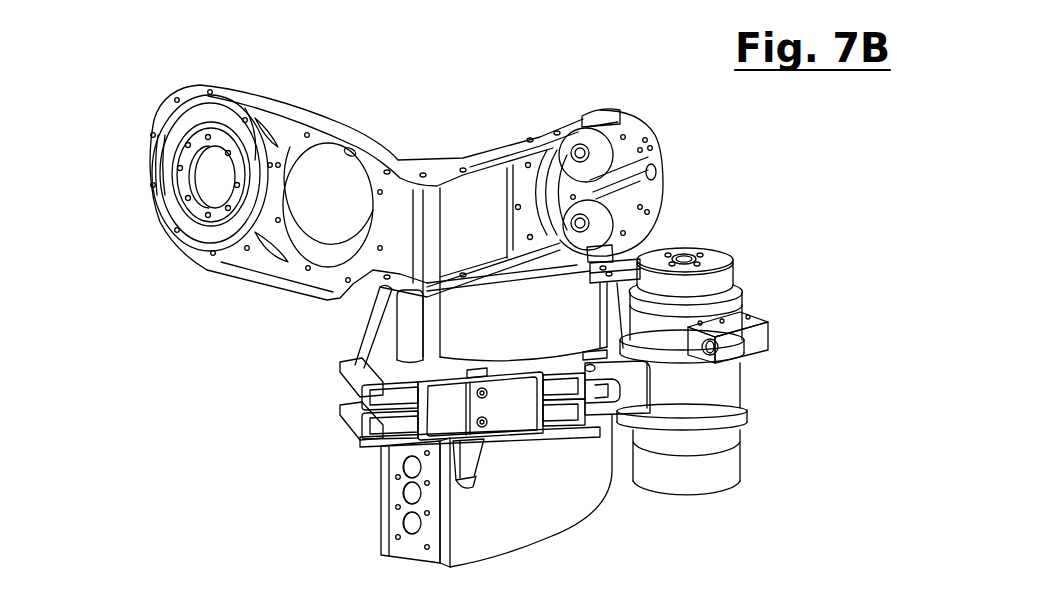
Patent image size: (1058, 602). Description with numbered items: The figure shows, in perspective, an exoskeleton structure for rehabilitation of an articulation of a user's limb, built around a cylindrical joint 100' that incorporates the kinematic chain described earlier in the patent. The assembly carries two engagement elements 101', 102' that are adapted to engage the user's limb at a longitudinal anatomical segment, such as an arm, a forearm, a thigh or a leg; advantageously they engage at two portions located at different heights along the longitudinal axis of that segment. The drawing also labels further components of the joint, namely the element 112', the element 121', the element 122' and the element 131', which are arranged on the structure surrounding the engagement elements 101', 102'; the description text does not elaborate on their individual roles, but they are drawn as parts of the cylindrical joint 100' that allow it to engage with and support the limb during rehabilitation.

The cylindrical joint 100' is at (495, 336).
The engagement element 101' is at (567, 491).
The engagement element 102' is at (580, 275).
The support bracket 112' is at (317, 362).
The motor 121' is at (749, 364).
The clamp block 122' is at (420, 438).
The latch wedge 131' is at (531, 513).